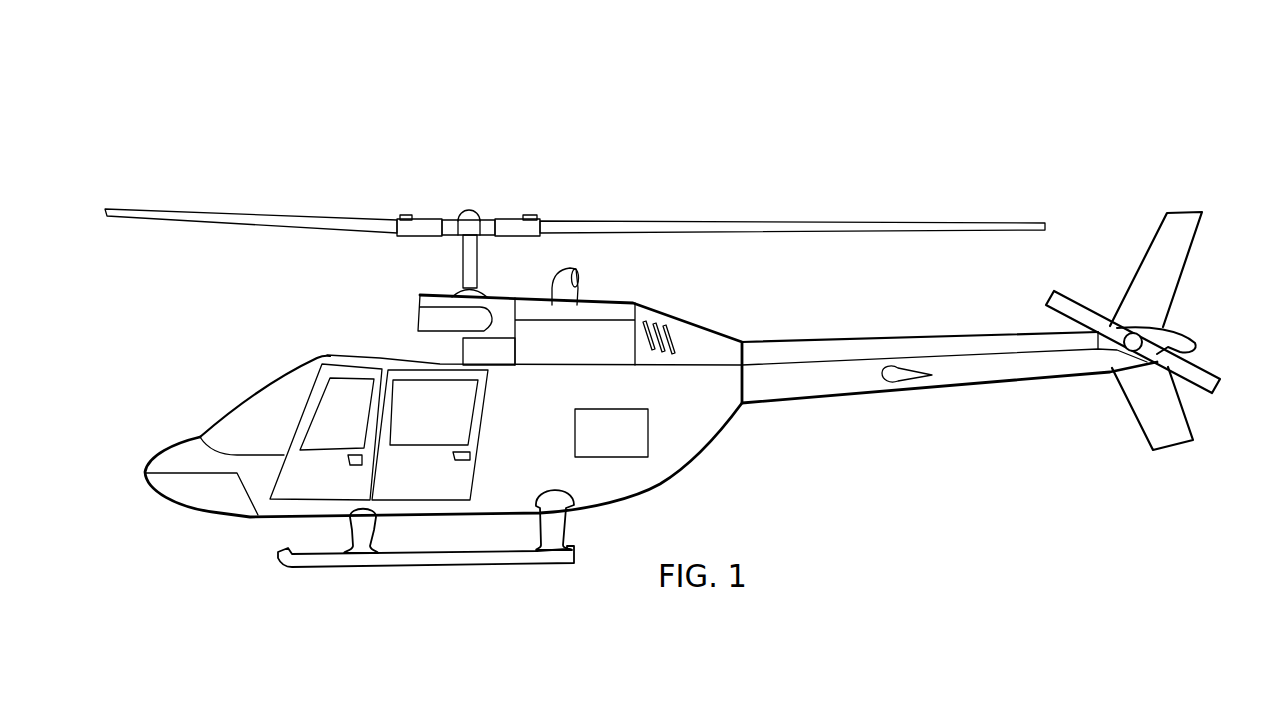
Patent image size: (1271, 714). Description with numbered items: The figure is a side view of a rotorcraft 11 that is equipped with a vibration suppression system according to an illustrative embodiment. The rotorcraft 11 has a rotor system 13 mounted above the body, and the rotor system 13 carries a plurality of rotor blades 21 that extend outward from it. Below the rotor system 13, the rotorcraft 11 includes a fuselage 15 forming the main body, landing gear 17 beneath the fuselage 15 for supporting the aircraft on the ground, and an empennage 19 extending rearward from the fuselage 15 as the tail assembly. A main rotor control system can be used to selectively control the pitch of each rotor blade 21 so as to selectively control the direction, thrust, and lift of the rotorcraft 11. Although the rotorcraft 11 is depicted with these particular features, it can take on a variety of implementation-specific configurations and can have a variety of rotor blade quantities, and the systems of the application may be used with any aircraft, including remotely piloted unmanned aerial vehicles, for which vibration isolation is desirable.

The rotorcraft 11 is at (386, 110).
The rotor system 13 is at (468, 212).
The rotor blades 21 is at (813, 222).
The fuselage 15 is at (202, 513).
The landing gear 17 is at (437, 565).
The empennage 19 is at (913, 333).